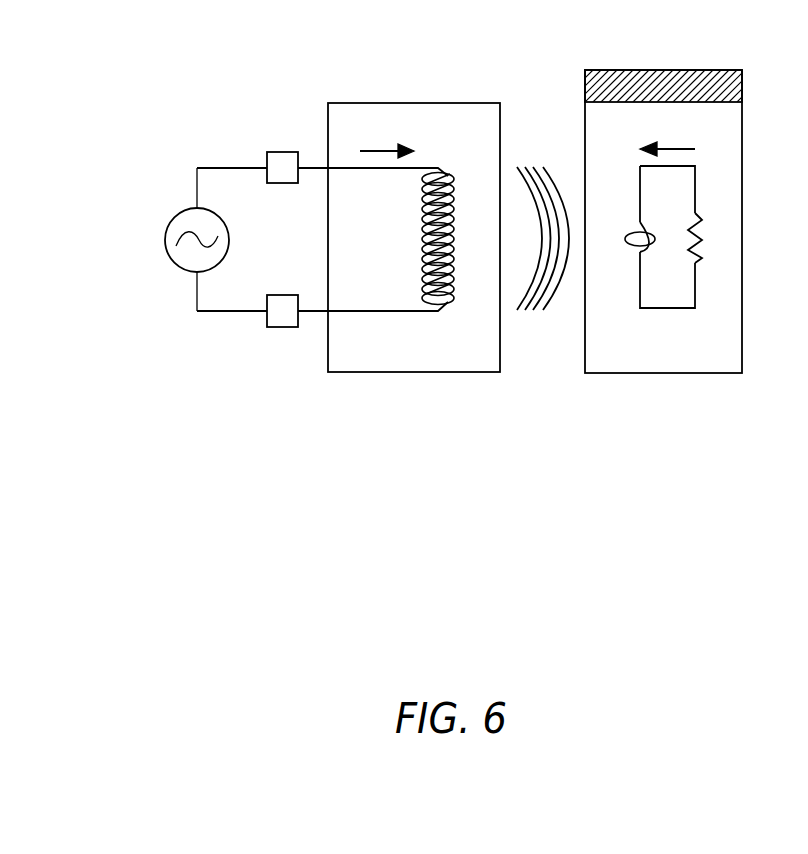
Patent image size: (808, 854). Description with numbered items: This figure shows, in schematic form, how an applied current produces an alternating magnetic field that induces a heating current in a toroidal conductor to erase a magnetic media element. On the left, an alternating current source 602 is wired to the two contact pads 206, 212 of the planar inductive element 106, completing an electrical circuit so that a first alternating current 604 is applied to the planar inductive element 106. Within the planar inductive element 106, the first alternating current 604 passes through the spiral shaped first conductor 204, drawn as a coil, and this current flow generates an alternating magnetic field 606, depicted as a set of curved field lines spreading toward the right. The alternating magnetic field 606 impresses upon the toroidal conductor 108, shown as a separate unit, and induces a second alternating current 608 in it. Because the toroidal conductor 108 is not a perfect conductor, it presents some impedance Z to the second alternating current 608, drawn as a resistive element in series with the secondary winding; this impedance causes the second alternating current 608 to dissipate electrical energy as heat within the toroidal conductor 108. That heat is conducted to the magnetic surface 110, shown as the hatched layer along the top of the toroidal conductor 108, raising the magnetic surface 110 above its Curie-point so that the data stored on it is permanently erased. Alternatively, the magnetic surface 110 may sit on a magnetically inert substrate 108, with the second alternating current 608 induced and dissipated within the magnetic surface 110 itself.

The planar inductive element 106 is at (416, 103).
The toroidal conductor 108 is at (742, 342).
The magnetic surface 110 is at (680, 70).
The first conductor 204 is at (462, 281).
The contact pad 206 is at (279, 152).
The contact pad 212 is at (281, 327).
The alternating current source 602 is at (173, 277).
The first alternating current 604 is at (384, 141).
The alternating magnetic field 606 is at (538, 149).
The second alternating current 608 is at (682, 149).